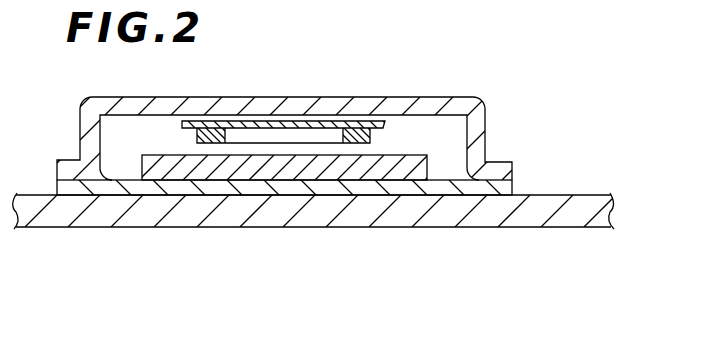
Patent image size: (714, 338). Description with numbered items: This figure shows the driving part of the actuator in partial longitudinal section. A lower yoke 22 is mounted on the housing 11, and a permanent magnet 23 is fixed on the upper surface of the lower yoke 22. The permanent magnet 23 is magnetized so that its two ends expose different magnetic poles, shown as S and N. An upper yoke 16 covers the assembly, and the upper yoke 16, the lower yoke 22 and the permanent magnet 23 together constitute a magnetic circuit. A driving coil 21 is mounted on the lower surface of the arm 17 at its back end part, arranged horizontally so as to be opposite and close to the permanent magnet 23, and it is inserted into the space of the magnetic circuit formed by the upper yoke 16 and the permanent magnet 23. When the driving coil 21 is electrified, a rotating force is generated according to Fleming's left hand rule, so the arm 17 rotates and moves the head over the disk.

The housing 11 is at (596, 224).
The upper yoke 16 is at (458, 103).
The arm 17 is at (351, 131).
The driving coil 21 is at (293, 127).
The lower yoke 22 is at (464, 188).
The permanent magnet 23 is at (313, 176).